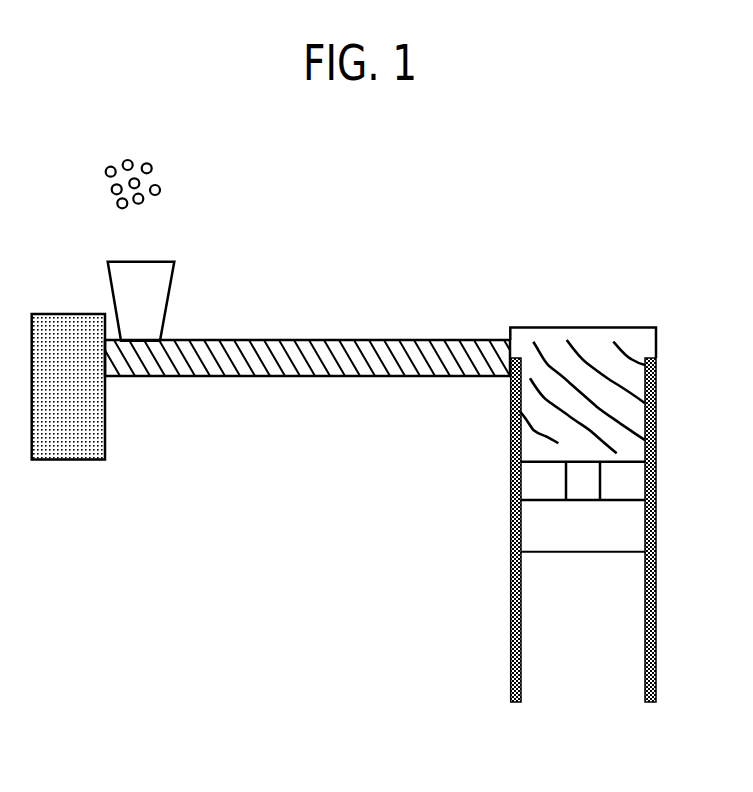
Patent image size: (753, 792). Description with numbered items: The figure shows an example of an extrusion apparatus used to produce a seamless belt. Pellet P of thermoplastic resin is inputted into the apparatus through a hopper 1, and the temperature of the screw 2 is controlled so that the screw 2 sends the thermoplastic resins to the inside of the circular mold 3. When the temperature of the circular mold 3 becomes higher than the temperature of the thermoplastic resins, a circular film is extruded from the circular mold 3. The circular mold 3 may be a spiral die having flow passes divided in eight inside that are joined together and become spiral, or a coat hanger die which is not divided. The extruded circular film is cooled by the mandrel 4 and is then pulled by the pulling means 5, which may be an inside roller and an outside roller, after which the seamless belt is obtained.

The pellet P is at (152, 165).
The hopper 1 is at (170, 293).
The screw 2 is at (270, 340).
The circular mold 3 is at (642, 341).
The mandrel 4 is at (585, 492).
The pulling means 5 is at (621, 543).